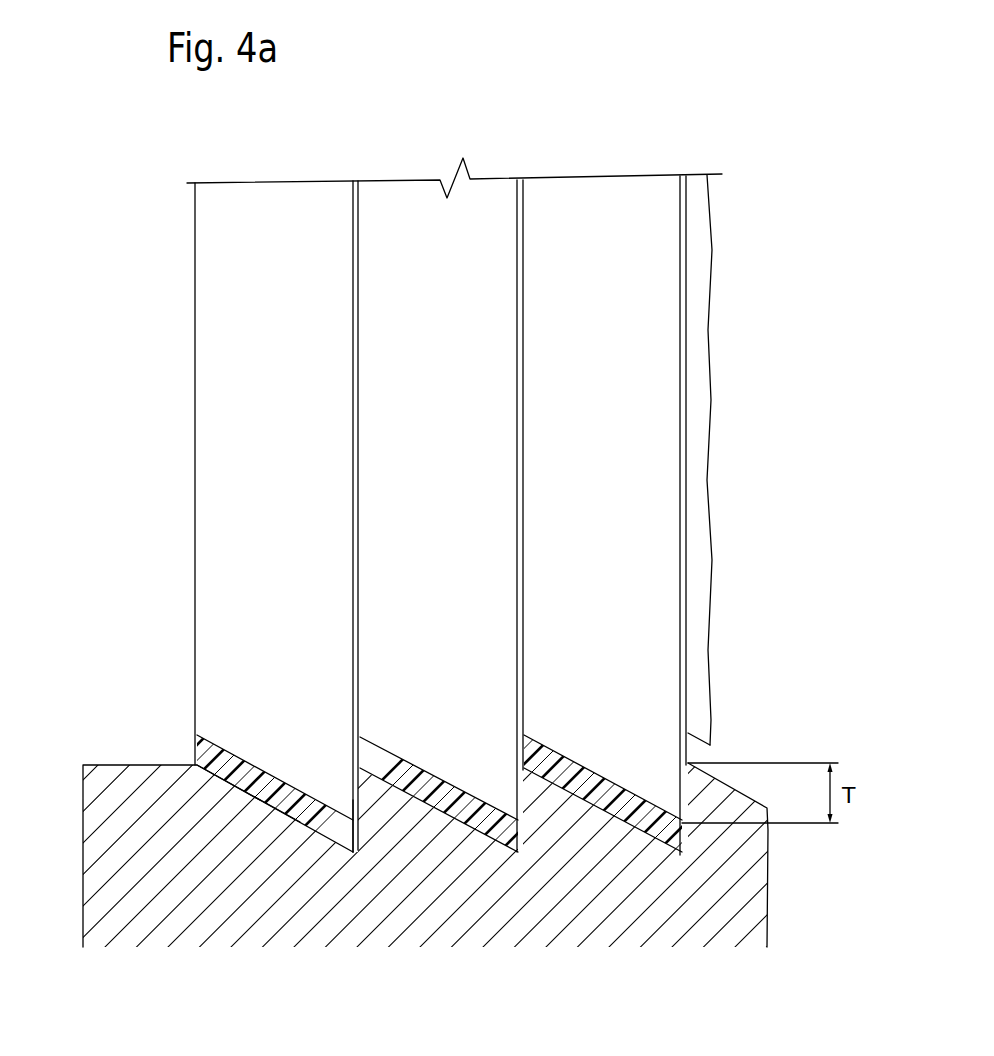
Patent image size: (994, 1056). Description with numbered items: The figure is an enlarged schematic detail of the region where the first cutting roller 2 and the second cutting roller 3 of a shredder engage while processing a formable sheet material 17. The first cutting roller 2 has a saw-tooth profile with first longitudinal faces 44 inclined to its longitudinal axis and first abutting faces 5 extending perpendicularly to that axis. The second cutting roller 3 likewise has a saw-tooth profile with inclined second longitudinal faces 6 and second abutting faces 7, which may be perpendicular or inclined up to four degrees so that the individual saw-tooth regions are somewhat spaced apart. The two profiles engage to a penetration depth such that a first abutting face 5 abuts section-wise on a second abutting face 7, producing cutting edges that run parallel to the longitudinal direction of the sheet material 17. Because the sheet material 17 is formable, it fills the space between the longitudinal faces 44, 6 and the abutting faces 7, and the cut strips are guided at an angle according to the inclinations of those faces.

The first cutting roller 2 is at (191, 393).
The second cutting roller 3 is at (98, 753).
The first longitudinal faces 44 is at (227, 741).
The first abutting faces 5 is at (348, 794).
The sheet material 17 is at (247, 783).
The second longitudinal faces 6 is at (270, 806).
The second abutting faces 7 is at (352, 838).